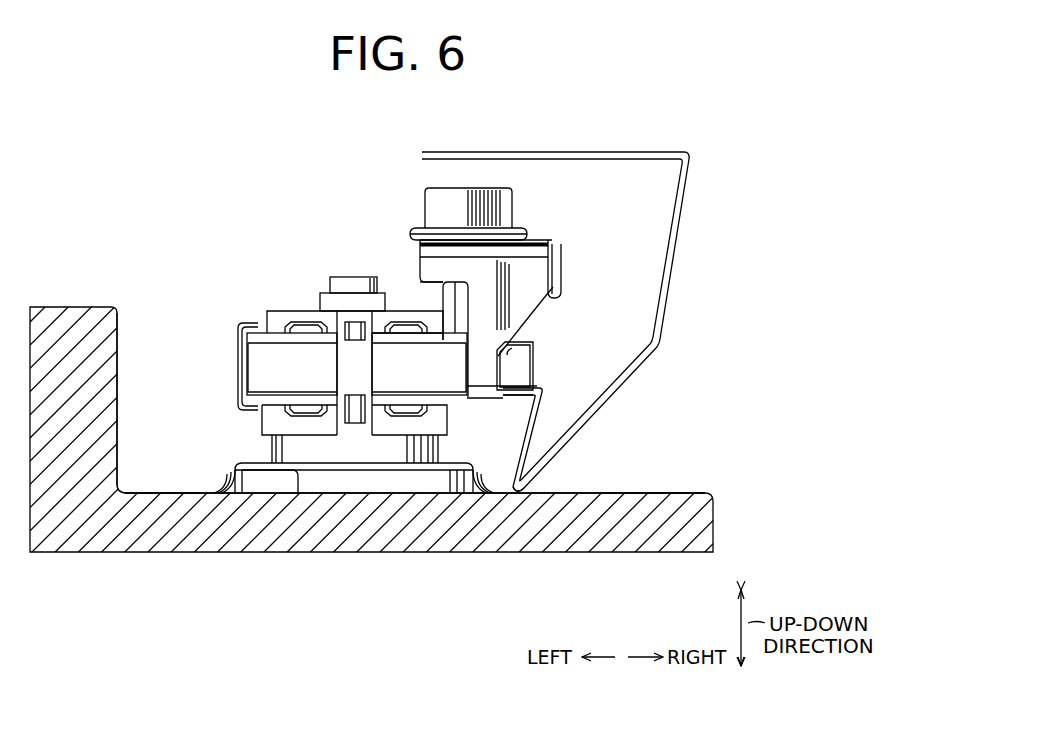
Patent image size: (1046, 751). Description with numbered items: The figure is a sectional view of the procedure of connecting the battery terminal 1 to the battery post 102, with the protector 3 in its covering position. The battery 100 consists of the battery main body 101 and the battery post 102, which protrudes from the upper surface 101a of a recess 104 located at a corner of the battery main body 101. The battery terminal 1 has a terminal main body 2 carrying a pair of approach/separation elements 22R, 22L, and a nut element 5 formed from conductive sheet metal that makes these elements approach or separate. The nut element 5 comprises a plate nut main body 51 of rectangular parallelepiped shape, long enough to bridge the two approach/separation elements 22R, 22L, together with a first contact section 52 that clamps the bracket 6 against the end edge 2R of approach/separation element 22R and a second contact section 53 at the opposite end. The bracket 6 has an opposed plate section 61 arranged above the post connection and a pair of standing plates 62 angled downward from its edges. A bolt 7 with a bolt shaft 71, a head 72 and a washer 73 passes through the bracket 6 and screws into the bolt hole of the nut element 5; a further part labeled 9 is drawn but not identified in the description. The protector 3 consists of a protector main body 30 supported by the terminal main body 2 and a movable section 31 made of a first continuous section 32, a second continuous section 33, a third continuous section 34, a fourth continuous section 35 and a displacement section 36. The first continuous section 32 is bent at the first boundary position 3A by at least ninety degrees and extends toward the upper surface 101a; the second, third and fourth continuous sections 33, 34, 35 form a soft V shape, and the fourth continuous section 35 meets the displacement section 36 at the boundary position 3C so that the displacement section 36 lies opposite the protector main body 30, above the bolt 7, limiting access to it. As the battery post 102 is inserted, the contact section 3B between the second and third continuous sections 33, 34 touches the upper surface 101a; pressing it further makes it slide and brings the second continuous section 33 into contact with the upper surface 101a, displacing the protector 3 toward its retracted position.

The battery terminal 1 is at (776, 358).
The terminal main body 2 is at (476, 329).
The end edge of approach/separation element 2R is at (445, 413).
The protector 3 is at (590, 112).
The first boundary position 3A is at (540, 366).
The contact section 3B is at (517, 493).
The boundary position 3C is at (692, 156).
The nut element 5 is at (535, 362).
The bracket 6 is at (605, 230).
The bolt 7 is at (515, 210).
The fixing bolt 9 is at (350, 276).
The approach/separation element 22L is at (296, 330).
The approach/separation element 22R is at (409, 358).
The protector main body 30 is at (490, 398).
The movable section 31 is at (82, 137).
The first continuous section 32 is at (540, 440).
The second continuous section 33 is at (595, 426).
The third continuous section 34 is at (662, 339).
The fourth continuous section 35 is at (683, 250).
The displacement section 36 is at (522, 152).
The plate nut main body 51 is at (354, 373).
The first contact section 52 is at (517, 358).
The second contact section 53 is at (238, 362).
The opposed plate section 61 is at (552, 246).
The standing plate 62 is at (556, 272).
The bolt shaft 71 is at (447, 297).
The head 72 is at (493, 200).
The washer 73 is at (525, 234).
The battery 100 is at (716, 540).
The battery main body 101 is at (705, 508).
The upper surface 101a is at (673, 493).
The battery post 102 is at (346, 314).
The recess 104 is at (142, 445).